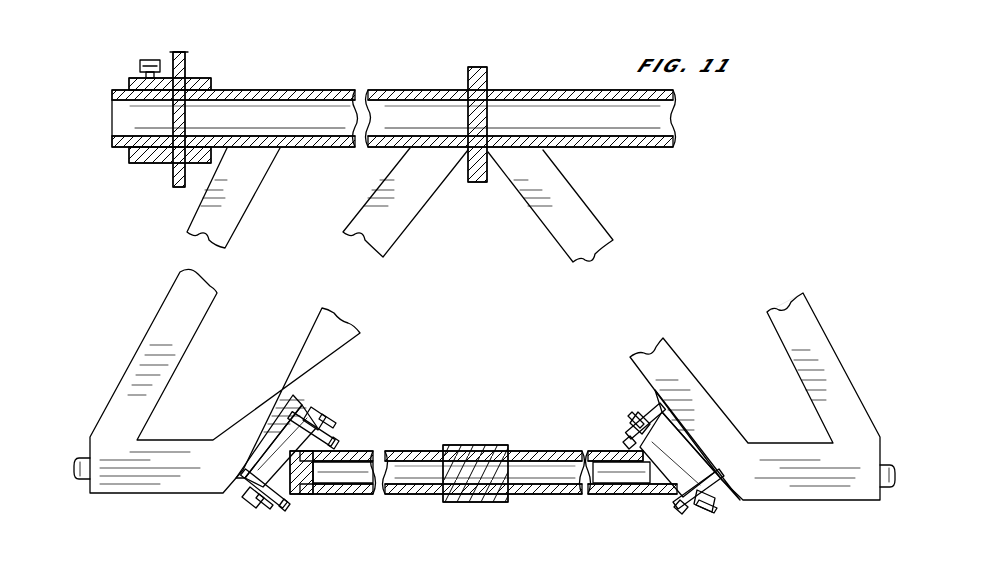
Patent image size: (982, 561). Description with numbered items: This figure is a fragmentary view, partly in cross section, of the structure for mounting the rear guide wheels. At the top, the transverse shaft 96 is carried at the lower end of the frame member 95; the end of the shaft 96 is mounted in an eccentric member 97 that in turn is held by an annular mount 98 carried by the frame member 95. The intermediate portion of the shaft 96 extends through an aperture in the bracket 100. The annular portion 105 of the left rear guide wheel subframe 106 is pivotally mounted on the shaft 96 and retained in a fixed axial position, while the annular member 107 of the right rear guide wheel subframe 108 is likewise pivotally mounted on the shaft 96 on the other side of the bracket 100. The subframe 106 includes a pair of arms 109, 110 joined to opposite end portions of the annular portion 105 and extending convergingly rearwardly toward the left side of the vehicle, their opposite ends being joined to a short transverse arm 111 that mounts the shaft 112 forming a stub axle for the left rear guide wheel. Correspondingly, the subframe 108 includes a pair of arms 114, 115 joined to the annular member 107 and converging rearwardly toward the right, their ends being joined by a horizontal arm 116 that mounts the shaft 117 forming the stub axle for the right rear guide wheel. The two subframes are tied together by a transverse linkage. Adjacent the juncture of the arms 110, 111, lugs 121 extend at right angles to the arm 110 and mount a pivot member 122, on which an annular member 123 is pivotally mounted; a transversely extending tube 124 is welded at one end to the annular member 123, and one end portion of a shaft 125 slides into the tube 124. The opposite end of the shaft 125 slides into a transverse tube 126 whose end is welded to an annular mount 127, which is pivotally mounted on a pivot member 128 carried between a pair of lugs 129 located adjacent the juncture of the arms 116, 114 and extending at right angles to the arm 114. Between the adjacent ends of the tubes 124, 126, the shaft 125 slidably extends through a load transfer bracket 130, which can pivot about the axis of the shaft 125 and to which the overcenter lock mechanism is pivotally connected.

The frame member 95 is at (186, 70).
The transverse shaft 96 is at (285, 118).
The eccentric member 97 is at (128, 141).
The annular mount 98 is at (150, 163).
The bracket 100 is at (489, 73).
The annular portion 105 is at (402, 92).
The left rear guide wheel subframe 106 is at (150, 317).
The annular member 107 is at (628, 150).
The right rear guide wheel subframe 108 is at (848, 332).
The arm 109 is at (228, 214).
The arm 110 is at (392, 222).
The short transverse arm 111 is at (168, 490).
The shaft 112 is at (82, 480).
The arm 114 is at (588, 232).
The arm 115 is at (790, 310).
The horizontal arm 116 is at (805, 497).
The shaft 117 is at (896, 488).
The lugs 121 is at (283, 506).
The pivot member 122 is at (322, 425).
The annular member 123 is at (300, 497).
The transversely extending tube 124 is at (405, 496).
The shaft 125 is at (545, 484).
The transverse tube 126 is at (612, 495).
The annular mount 127 is at (690, 450).
The pivot member 128 is at (690, 509).
The lugs 129 is at (626, 434).
The load transfer bracket 130 is at (476, 502).